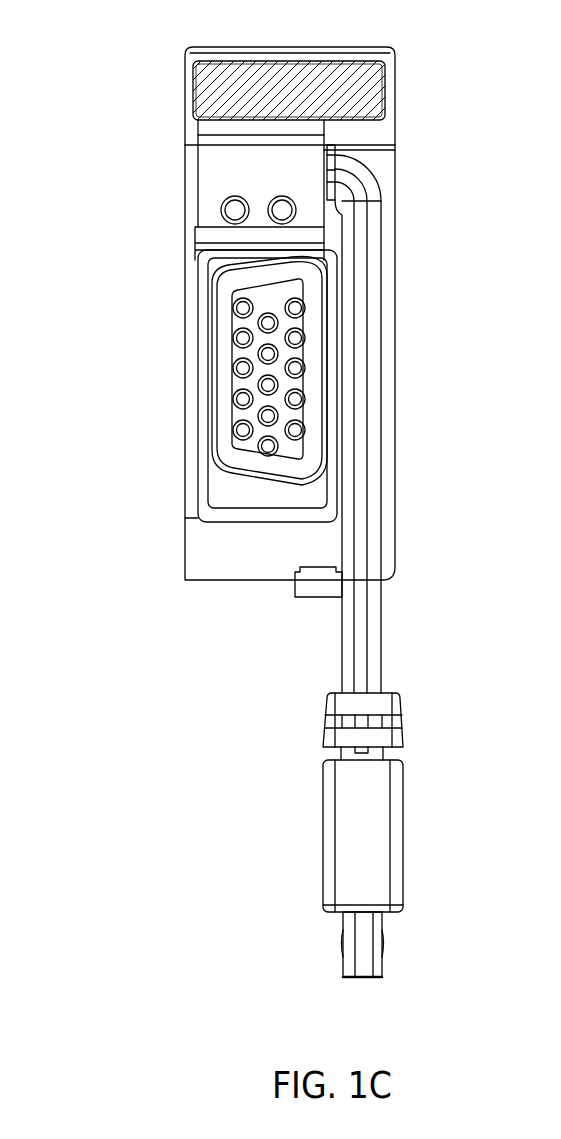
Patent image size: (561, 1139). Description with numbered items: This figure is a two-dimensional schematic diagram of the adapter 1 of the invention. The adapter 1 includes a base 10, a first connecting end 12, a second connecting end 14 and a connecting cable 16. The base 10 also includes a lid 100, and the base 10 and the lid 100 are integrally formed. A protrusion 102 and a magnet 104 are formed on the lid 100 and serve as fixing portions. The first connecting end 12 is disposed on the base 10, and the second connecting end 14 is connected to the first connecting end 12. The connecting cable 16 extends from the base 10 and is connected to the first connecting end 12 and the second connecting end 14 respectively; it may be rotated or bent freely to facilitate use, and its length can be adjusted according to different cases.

The adapter 1 is at (125, 62).
The base 10 is at (220, 195).
The first connecting end 12 is at (225, 388).
The second connecting end 14 is at (380, 825).
The connecting cable 16 is at (377, 643).
The lid 100 is at (392, 348).
The protrusion 102 is at (316, 597).
The magnet 104 is at (372, 80).